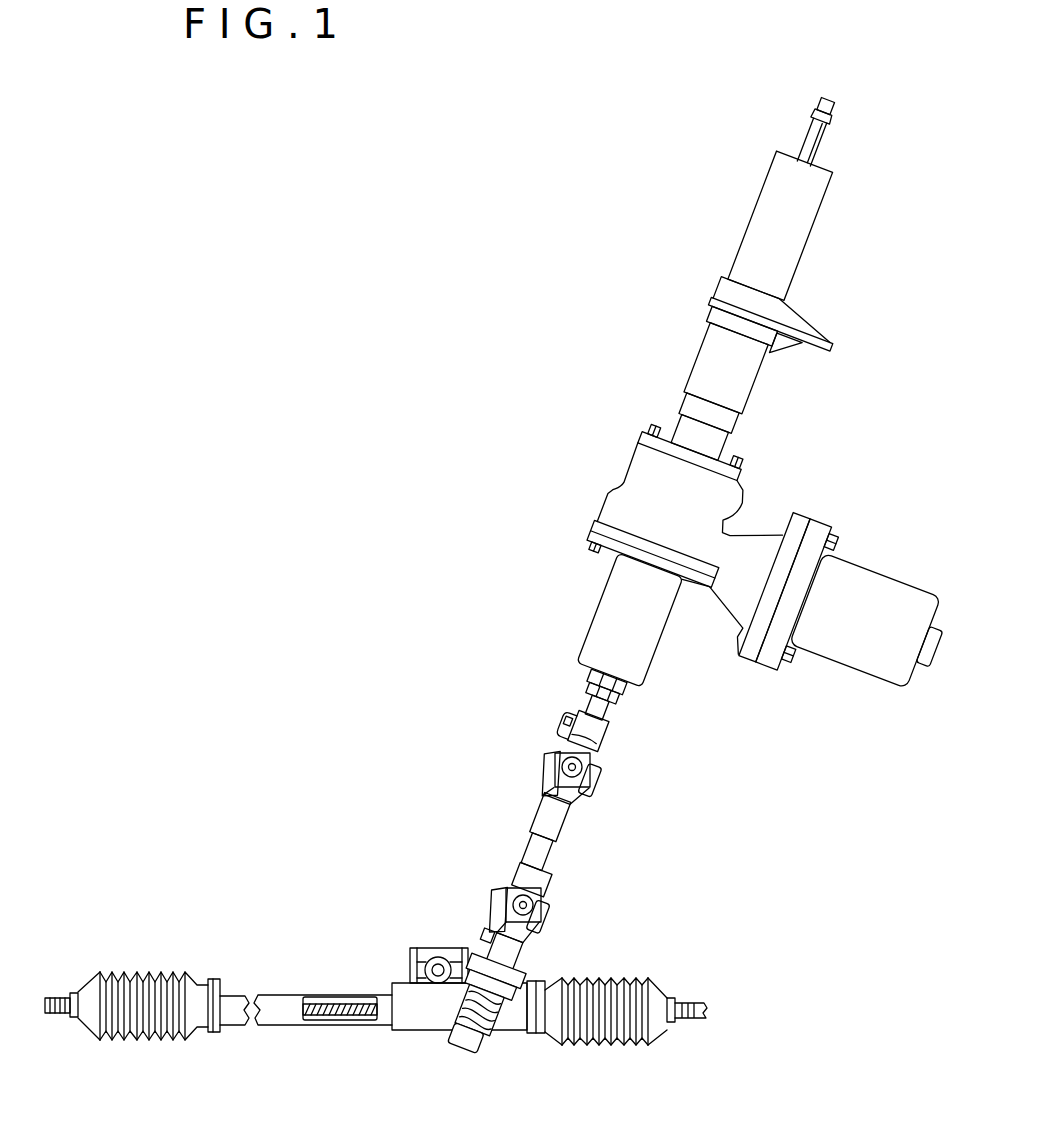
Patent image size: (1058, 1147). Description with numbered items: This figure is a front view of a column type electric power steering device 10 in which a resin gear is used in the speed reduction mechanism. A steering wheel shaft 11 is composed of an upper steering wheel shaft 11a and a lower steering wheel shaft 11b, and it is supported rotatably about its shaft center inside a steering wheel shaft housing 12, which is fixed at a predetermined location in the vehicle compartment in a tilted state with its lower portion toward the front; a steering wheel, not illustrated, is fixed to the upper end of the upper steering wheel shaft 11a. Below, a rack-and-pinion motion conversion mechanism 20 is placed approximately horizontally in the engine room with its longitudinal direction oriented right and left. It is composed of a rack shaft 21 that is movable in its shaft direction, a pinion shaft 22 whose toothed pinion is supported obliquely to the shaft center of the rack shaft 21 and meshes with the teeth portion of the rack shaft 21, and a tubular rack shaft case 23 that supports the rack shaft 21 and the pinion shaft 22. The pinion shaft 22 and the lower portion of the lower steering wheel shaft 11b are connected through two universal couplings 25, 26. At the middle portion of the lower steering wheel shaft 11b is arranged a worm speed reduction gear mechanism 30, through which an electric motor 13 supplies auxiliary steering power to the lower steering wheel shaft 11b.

The column type electric power steering device 10 is at (394, 427).
The steering wheel shaft 11 is at (623, 400).
The upper steering wheel shaft 11a is at (820, 101).
The lower steering wheel shaft 11b is at (583, 706).
The steering wheel shaft housing 12 is at (752, 224).
The electric motor 13 is at (852, 672).
The rack-and-pinion motion conversion mechanism 20 is at (326, 963).
The rack shaft 21 is at (342, 1023).
The pinion shaft 22 is at (480, 1022).
The rack shaft case 23 is at (430, 1030).
The universal coupling 25 is at (590, 793).
The universal coupling 26 is at (547, 907).
The worm speed reduction gear mechanism 30 is at (615, 500).